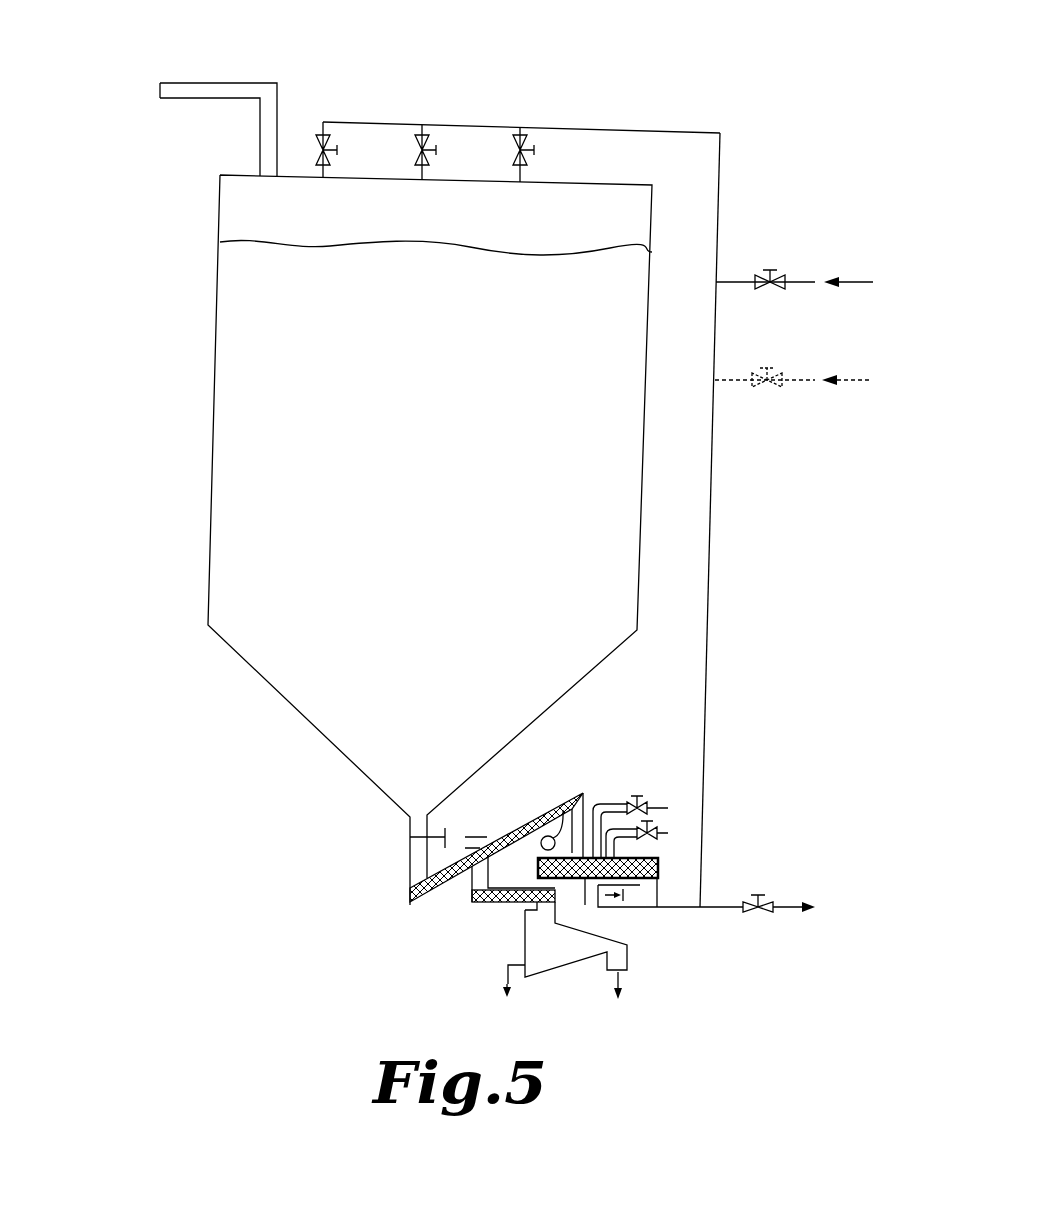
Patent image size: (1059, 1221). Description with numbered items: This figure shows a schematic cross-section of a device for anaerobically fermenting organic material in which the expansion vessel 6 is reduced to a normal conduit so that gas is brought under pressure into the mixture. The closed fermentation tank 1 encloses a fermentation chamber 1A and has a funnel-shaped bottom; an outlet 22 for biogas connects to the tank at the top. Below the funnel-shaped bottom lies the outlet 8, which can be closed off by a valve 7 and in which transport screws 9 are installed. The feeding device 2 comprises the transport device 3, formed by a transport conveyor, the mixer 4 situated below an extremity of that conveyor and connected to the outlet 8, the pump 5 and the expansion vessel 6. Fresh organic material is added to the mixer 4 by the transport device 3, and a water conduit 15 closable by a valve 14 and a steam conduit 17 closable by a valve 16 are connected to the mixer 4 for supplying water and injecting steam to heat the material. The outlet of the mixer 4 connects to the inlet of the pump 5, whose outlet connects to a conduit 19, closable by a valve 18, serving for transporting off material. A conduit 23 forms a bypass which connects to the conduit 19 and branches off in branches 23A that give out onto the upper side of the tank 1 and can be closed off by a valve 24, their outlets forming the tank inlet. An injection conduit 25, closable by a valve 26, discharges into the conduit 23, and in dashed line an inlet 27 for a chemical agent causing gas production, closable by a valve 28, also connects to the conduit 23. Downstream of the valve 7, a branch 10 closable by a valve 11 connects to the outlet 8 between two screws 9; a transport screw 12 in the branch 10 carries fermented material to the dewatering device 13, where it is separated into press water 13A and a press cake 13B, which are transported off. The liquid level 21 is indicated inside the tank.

The fermentation tank 1 is at (190, 473).
The fermentation chamber 1A is at (297, 543).
The feeding device 2 is at (672, 867).
The transport device 3 is at (566, 797).
The mixer 4 is at (585, 905).
The pump 5 is at (645, 909).
The expansion vessel 6 is at (712, 652).
The valve 7 is at (440, 828).
The outlet 8 is at (398, 822).
The transport screws 9 is at (527, 820).
The branch 10 is at (472, 888).
The valve 11 is at (499, 862).
The transport screw 12 is at (510, 901).
The dewatering device 13 is at (565, 952).
The press water 13A is at (507, 977).
The press cake 13B is at (618, 977).
The valve 14 is at (641, 800).
The water conduit 15 is at (597, 804).
The valve 16 is at (655, 832).
The steam conduit 17 is at (625, 840).
The valve 18 is at (762, 915).
The conduit 19 is at (787, 905).
The liquid level 21 is at (272, 245).
The outlet for biogas 22 is at (199, 86).
The conduit 23 is at (710, 548).
The branches 23A is at (443, 124).
The valve 24 is at (323, 145).
The injection conduit 25 is at (738, 281).
The valve 26 is at (783, 278).
The inlet 27 is at (727, 378).
The valve 28 is at (784, 375).